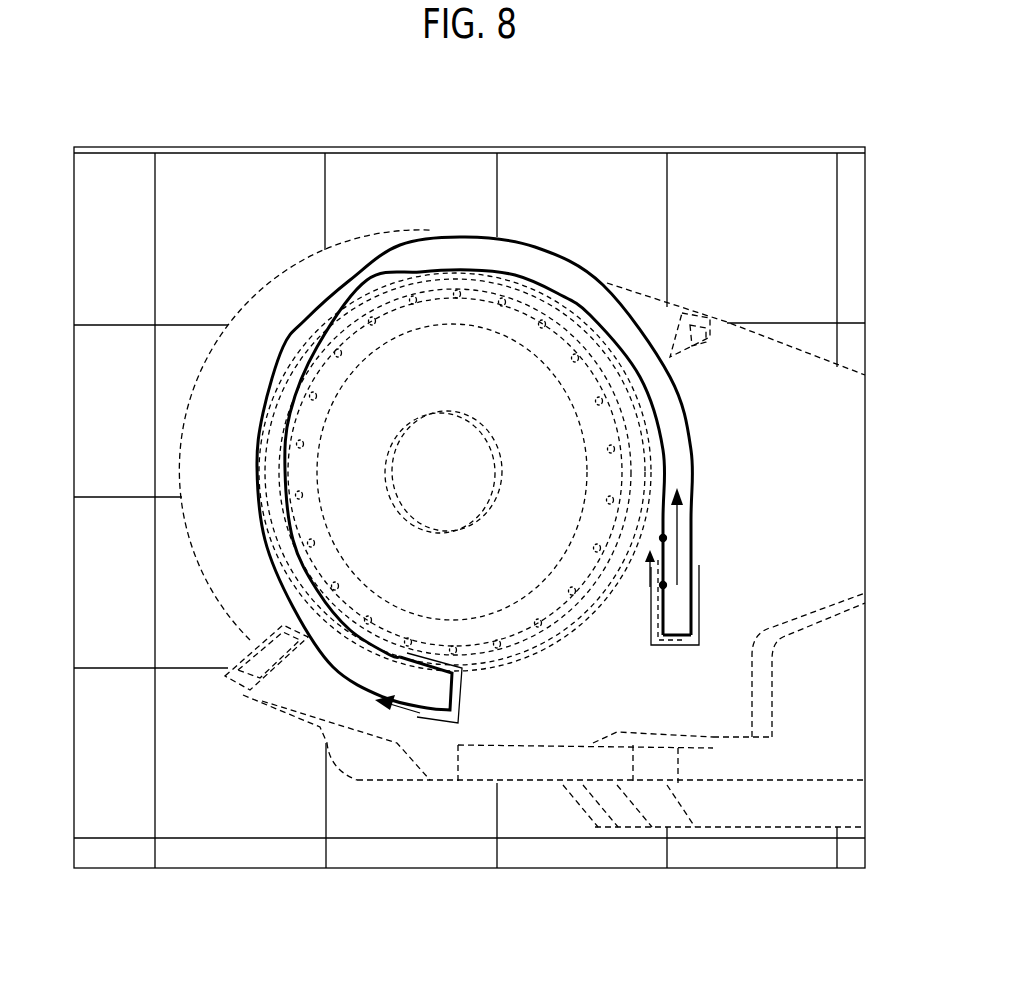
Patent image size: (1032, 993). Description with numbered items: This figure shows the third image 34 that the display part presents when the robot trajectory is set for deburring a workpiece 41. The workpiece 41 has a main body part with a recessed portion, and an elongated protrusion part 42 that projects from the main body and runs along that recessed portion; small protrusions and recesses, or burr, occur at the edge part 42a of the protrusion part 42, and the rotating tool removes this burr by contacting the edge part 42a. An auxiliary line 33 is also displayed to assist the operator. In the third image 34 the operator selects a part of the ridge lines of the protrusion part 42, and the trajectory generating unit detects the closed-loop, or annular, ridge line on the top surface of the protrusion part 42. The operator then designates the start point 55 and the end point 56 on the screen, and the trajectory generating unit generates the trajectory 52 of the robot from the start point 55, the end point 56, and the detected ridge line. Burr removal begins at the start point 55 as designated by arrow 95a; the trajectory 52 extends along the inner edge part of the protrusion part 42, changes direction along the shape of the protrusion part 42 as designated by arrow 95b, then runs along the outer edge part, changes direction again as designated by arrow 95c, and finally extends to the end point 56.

The auxiliary line 33 is at (155, 187).
The third image 34 is at (750, 147).
The workpiece 41 is at (303, 262).
The protrusion part 42 is at (398, 247).
The edge part 42a is at (470, 237).
The trajectory 52 is at (540, 248).
The start point 55 is at (663, 585).
The end point 56 is at (663, 538).
The arrow 95a is at (677, 528).
The arrow 95b is at (407, 717).
The arrow 95c is at (690, 648).